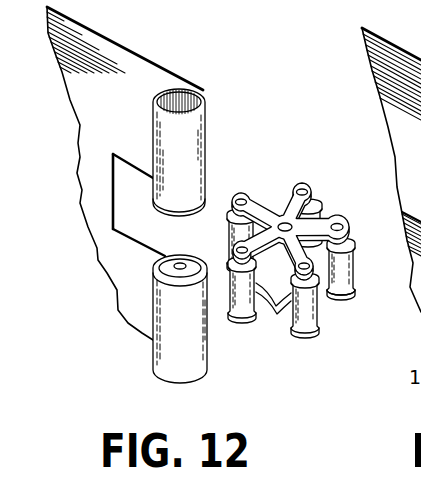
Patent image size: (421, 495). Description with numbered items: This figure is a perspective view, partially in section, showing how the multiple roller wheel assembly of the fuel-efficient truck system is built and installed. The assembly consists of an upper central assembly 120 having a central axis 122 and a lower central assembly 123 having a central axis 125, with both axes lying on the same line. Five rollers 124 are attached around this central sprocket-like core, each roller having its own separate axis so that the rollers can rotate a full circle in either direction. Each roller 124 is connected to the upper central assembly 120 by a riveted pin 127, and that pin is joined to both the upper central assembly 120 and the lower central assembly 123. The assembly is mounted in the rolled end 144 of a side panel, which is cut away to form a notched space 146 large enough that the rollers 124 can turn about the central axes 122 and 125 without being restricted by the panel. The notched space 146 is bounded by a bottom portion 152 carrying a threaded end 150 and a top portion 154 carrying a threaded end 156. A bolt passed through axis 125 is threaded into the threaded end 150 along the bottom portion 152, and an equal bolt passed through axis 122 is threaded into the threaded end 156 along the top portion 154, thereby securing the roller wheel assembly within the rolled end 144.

The upper central assembly 120 is at (288, 264).
The central axis 122 is at (285, 218).
The lower central assembly 123 is at (278, 328).
The roller 124 is at (357, 270).
The central axis 125 is at (257, 308).
The riveted pin 127 is at (232, 228).
The rolled end 144 is at (207, 102).
The notched space 146 is at (135, 210).
The threaded end 150 is at (162, 263).
The bottom portion 152 is at (156, 352).
The top portion 154 is at (205, 142).
The threaded end 156 is at (205, 210).